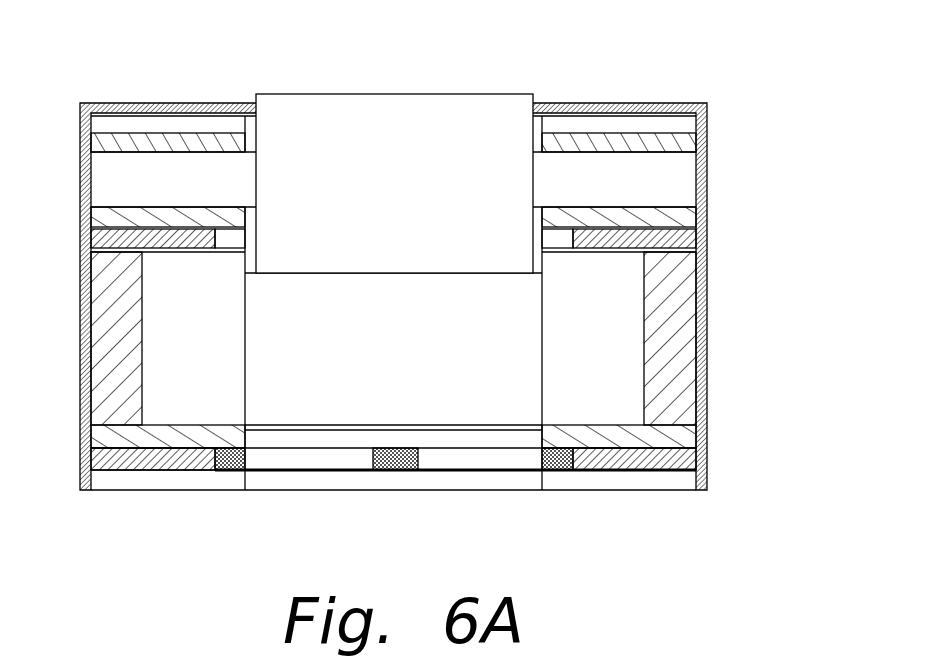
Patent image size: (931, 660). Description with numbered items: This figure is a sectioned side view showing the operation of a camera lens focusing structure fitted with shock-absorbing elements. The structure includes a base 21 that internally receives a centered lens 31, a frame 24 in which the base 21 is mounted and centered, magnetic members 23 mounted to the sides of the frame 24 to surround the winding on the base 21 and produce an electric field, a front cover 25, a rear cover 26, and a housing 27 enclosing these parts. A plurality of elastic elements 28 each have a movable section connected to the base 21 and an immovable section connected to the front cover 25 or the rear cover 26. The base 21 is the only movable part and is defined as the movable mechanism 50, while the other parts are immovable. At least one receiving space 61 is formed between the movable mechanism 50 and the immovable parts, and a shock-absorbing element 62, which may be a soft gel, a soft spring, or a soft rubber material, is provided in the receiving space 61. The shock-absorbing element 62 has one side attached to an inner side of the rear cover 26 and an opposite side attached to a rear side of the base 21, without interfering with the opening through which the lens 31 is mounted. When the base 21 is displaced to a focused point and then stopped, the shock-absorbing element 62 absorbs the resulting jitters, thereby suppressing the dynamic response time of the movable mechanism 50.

The base 21 is at (490, 375).
The magnetic members 23 is at (110, 380).
The frame 24 is at (590, 332).
The front cover 25 is at (178, 142).
The rear cover 26 is at (152, 480).
The housing 27 is at (82, 305).
The elastic elements 28 is at (97, 218).
The lens 31 is at (468, 112).
The movable mechanism 50 is at (457, 413).
The receiving space 61 is at (323, 477).
The shock-absorbing element 62 is at (225, 473).